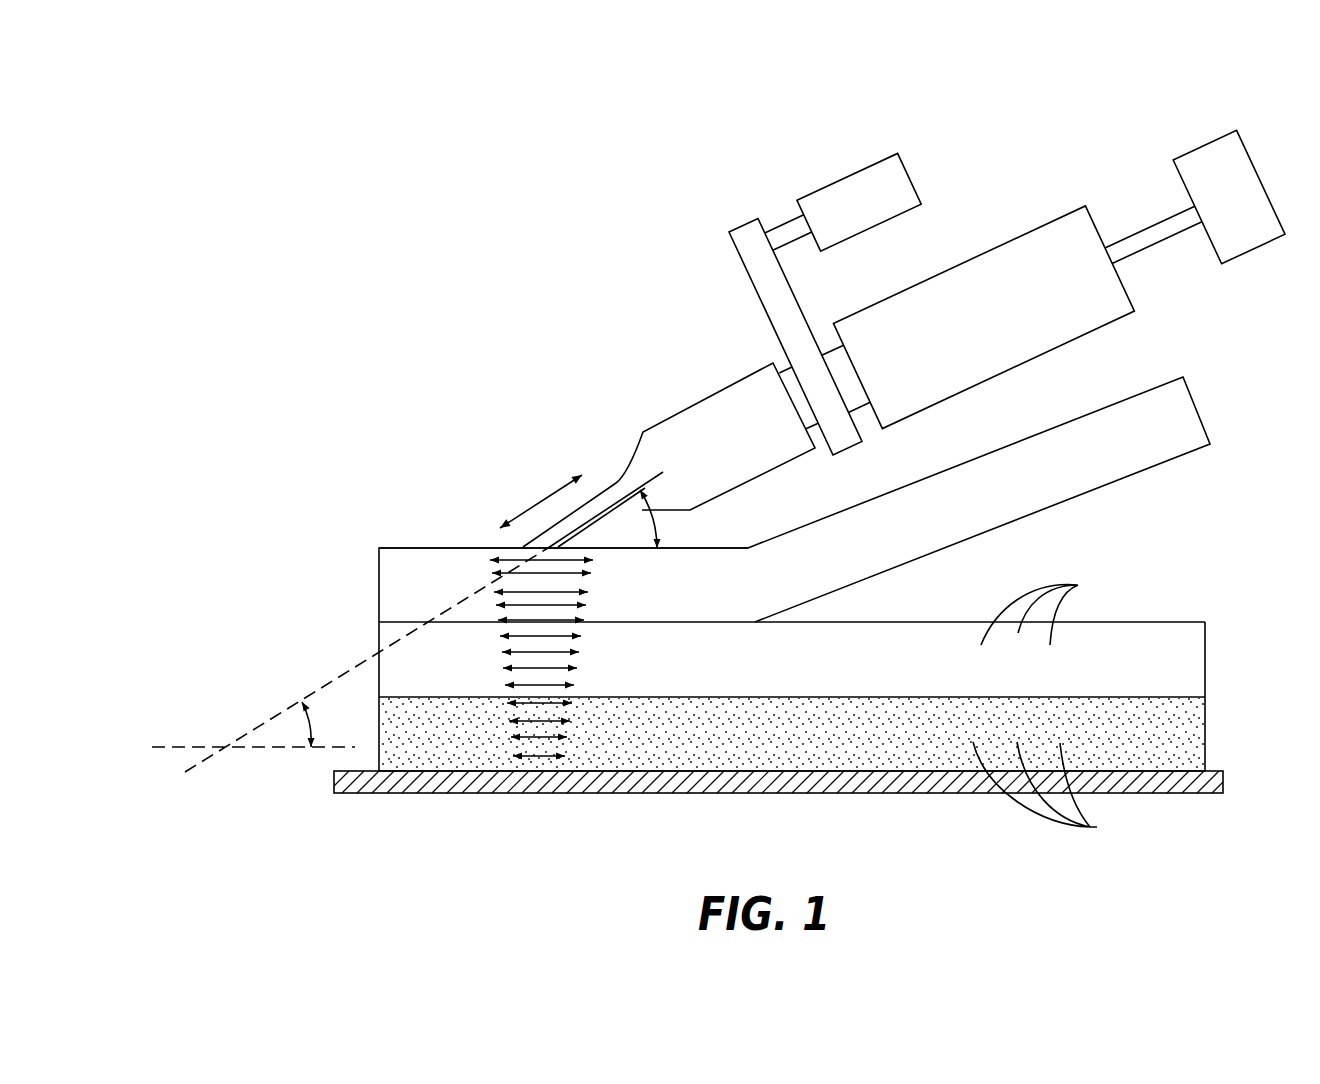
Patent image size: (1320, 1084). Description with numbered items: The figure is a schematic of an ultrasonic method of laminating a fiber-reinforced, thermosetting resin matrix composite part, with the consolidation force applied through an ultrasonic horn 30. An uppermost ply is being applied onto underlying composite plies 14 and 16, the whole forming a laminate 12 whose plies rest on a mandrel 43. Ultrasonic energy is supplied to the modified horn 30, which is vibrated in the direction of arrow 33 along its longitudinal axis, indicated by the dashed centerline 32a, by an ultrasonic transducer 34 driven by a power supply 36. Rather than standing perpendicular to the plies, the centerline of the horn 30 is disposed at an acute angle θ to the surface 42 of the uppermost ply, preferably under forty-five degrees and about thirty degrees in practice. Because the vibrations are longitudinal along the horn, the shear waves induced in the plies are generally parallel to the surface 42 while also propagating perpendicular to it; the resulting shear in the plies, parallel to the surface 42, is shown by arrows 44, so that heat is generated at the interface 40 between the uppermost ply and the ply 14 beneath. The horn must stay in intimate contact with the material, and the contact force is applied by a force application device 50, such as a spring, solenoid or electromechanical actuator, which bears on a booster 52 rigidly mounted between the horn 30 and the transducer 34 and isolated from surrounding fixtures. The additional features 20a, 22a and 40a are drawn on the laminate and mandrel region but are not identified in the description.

The laminate 12 is at (363, 603).
The composite ply 14 is at (1188, 651).
The composite ply 16 is at (1180, 735).
The lower layer interface / bond lines 20a is at (1055, 792).
The upper layer interface lines 22a is at (1051, 609).
The ultrasonic horn 30 is at (680, 430).
The horn axis 32a is at (330, 683).
The arrow 33 is at (536, 506).
The ultrasonic transducer 34 is at (1005, 243).
The power supply 36 is at (1221, 137).
The interface 40 is at (678, 612).
The clamp contact region 40a is at (467, 698).
The surface 42 is at (422, 548).
The mandrel 43 is at (1226, 782).
The arrows 44 is at (543, 605).
The force application device 50 is at (835, 183).
The booster 52 is at (782, 360).